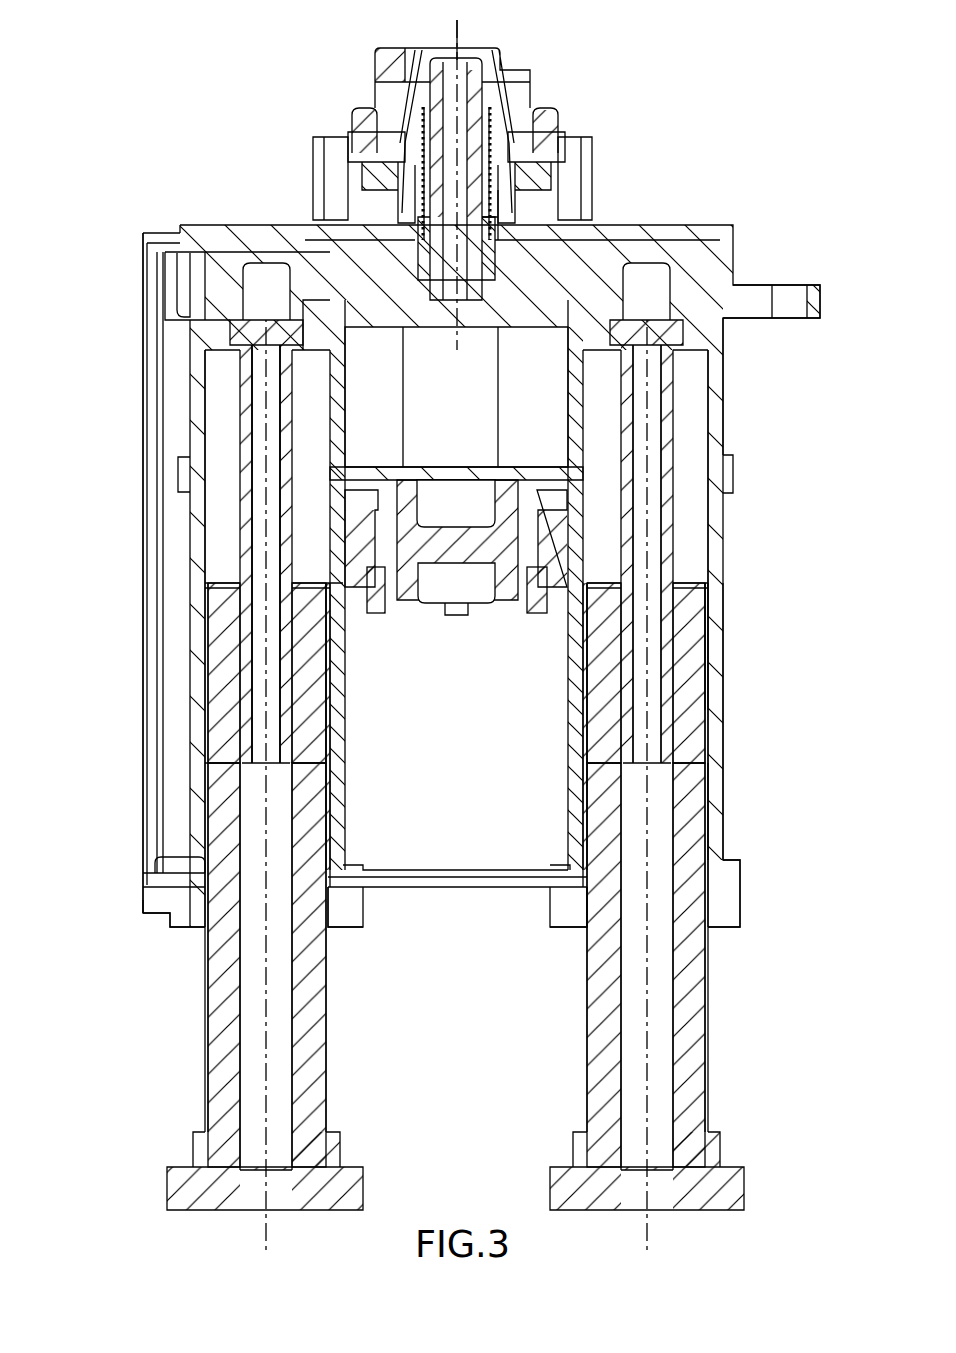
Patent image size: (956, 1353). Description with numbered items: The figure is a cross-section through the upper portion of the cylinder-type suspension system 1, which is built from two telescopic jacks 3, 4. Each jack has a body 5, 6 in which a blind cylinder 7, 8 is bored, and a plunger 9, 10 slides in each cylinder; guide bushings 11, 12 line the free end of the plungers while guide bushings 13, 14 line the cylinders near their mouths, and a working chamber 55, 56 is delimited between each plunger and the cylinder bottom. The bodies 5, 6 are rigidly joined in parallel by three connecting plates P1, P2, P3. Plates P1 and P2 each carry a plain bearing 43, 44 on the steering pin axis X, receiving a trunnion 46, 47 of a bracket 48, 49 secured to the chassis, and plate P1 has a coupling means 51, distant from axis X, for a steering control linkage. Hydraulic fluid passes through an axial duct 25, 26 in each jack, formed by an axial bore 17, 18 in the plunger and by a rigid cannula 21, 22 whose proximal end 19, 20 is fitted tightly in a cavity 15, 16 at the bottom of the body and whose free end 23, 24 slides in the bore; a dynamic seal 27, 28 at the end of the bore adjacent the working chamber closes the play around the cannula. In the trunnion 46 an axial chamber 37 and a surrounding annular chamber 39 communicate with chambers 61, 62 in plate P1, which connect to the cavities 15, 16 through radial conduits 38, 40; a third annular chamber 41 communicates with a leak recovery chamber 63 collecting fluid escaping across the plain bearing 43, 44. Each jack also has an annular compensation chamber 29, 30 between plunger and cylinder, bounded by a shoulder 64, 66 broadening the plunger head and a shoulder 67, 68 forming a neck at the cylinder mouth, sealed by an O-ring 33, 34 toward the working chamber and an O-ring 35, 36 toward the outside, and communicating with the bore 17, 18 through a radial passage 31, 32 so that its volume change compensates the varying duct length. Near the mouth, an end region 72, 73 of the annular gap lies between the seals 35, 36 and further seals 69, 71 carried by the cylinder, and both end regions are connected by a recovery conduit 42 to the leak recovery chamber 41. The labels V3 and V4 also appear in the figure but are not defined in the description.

The cylinder-type suspension system 1 is at (140, 1090).
The telescopic jack 3 is at (190, 408).
The telescopic jack 4 is at (748, 388).
The body 5 is at (255, 418).
The body 6 is at (656, 470).
The blind cylinder 7 is at (244, 446).
The blind cylinder 8 is at (733, 470).
The plunger 9 is at (222, 1048).
The plunger 10 is at (695, 1085).
The guide bushing 11 is at (196, 640).
The guide bushing 12 is at (718, 668).
The guide bushing 13 is at (170, 862).
The guide bushing 14 is at (724, 847).
The cavity 15 is at (192, 303).
The cavity 16 is at (700, 266).
The axial bore 17 is at (240, 1125).
The axial bore 18 is at (662, 1150).
The proximal end 19 is at (235, 336).
The proximal end 20 is at (716, 291).
The rigid cannula 21 is at (256, 492).
The rigid cannula 22 is at (665, 628).
The free end 23 is at (242, 908).
The free end 24 is at (672, 905).
The axial duct 25 is at (270, 540).
The axial duct 26 is at (656, 645).
The dynamic seal 27 is at (208, 592).
The dynamic seal 28 is at (700, 592).
The compensation chamber 29 is at (215, 770).
The compensation chamber 30 is at (582, 770).
The radial passage 31 is at (331, 689).
The radial passage 32 is at (706, 729).
The O-ring 33 is at (205, 700).
The O-ring 34 is at (706, 701).
The O-ring 35 is at (208, 782).
The O-ring 36 is at (708, 771).
The axial chamber 37 is at (362, 115).
The radial conduit 38 is at (258, 268).
The annular chamber 39 is at (533, 118).
The radial conduit 40 is at (600, 258).
The third annular chamber 41 is at (378, 92).
The recovery conduit 42 is at (160, 245).
The plain bearing 43 is at (553, 176).
The plain bearing 44 is at (458, 613).
The trunnion 46 is at (580, 146).
The trunnion 47 is at (380, 600).
The bracket 48 is at (322, 140).
The bracket 49 is at (532, 600).
The coupling means 51 is at (800, 296).
The working chamber 55 is at (218, 381).
The working chamber 56 is at (695, 366).
The chamber 61 is at (555, 228).
The chamber 62 is at (428, 230).
The leak recovery chamber 63 is at (392, 178).
The shoulder 64 is at (329, 712).
The shoulder 66 is at (584, 705).
The shoulder 67 is at (331, 775).
The shoulder 68 is at (585, 785).
The seal 69 is at (329, 910).
The seal 71 is at (585, 910).
The end region 72 is at (342, 868).
The end region 73 is at (571, 868).
The steering pin axis X is at (462, 42).
The connecting plate P1 is at (188, 321).
The connecting plate P2 is at (178, 475).
The connecting plate P3 is at (150, 907).
The volume V3 is at (250, 1196).
The volume V4 is at (700, 1200).